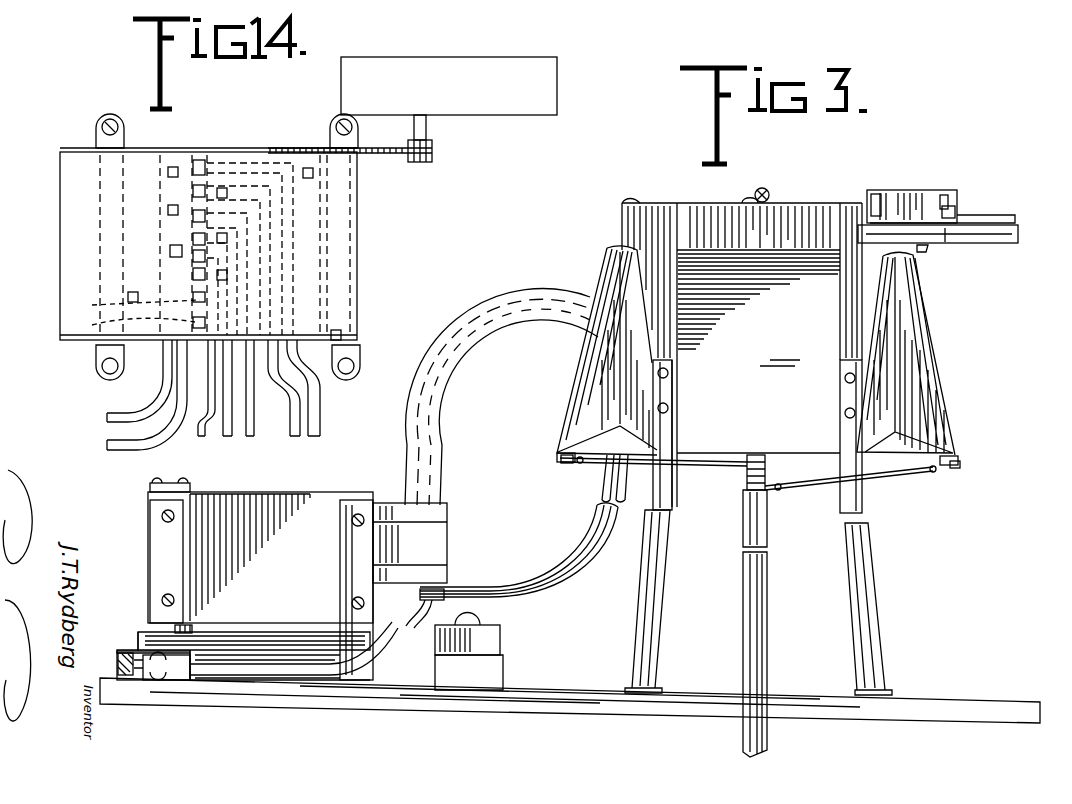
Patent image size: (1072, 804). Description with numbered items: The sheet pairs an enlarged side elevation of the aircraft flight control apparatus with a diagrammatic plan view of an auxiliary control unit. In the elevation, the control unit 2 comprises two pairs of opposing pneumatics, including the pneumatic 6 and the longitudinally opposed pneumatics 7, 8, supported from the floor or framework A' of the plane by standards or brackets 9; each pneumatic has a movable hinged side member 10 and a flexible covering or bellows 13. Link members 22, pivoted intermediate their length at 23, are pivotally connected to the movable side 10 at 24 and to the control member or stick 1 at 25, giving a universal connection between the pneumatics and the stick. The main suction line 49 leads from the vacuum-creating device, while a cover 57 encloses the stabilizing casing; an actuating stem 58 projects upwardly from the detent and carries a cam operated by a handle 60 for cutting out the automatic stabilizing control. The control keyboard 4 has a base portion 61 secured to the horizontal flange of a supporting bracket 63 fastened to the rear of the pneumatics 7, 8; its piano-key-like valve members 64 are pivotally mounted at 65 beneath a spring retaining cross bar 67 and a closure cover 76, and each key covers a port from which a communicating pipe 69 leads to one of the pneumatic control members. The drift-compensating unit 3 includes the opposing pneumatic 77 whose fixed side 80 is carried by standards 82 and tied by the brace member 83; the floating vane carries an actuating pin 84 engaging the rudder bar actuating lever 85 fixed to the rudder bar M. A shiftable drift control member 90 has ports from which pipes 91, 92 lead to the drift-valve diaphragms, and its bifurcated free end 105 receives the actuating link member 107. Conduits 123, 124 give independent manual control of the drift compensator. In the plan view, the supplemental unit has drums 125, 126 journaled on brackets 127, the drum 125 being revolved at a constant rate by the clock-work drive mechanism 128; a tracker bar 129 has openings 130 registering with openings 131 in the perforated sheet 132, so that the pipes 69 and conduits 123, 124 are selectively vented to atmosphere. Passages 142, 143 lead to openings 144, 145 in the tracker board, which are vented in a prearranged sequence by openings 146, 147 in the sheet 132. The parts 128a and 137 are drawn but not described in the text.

In FIG. 3, the control member or stick 1 is at (767, 628).
In FIG. 3, the control unit 2 is at (690, 265).
In FIG. 3, the drift-compensating unit 3 is at (284, 492).
In FIG. 3, the control keyboard 4 is at (928, 190).
In FIG. 3, the pneumatic 6 is at (742, 328).
In FIG. 3, the pneumatic 7 is at (568, 368).
In FIG. 3, the pneumatic 8 is at (938, 362).
In FIG. 3, the standards or brackets 9 is at (666, 570).
In FIG. 3, the movable side member 10 is at (565, 432).
In FIG. 3, the flexible covering or bellows 13 is at (672, 425).
In FIG. 3, the link members 22 is at (752, 455).
In FIG. 3, the intermediate pivot 23 is at (580, 463).
In FIG. 3, the pivotal connection to movable side 24 is at (560, 462).
In FIG. 3, the pivotal connection to control stick 25 is at (747, 455).
In FIG. 3, the main suction line 49 is at (478, 368).
In FIG. 3, the cover 57 is at (818, 205).
In FIG. 3, the actuating stem 58 is at (770, 187).
In FIG. 3, the handle 60 is at (749, 200).
In FIG. 3, the base portion 61 is at (964, 246).
In FIG. 3, the supporting bracket 63 is at (925, 254).
In FIG. 3, the valve members 64 is at (990, 216).
In FIG. 3, the pivot 65 is at (948, 194).
In FIG. 3, the spring retaining cross bar 67 is at (880, 190).
In FIG. 14, the communicating pipe 69 is at (222, 437).
In FIG. 3, the closure member or cover 76 is at (955, 206).
In FIG. 3, the pneumatic 77 is at (328, 500).
In FIG. 3, the fixed side 80 is at (232, 480).
In FIG. 3, the standards 82 is at (156, 575).
In FIG. 3, the brace member 83 is at (172, 486).
In FIG. 3, the actuating pin 84 is at (195, 628).
In FIG. 3, the rudder bar actuating lever 85 is at (146, 634).
In FIG. 3, the drift control member 90 is at (328, 680).
In FIG. 3, the communicating passage and pipe 91 is at (246, 660).
In FIG. 3, the communicating passage and pipe 92 is at (418, 614).
In FIG. 3, the bifurcated end 105 is at (117, 662).
In FIG. 3, the actuating link member 107 is at (130, 678).
In FIG. 14, the conduit 123 is at (252, 437).
In FIG. 14, the conduit 124 is at (292, 437).
In FIG. 14, the cylinder or drum 125 is at (350, 228).
In FIG. 14, the cylinder or drum 126 is at (60, 212).
In FIG. 14, the brackets 127 is at (124, 126).
In FIG. 14, the clock-work drive mechanism 128 is at (514, 92).
In FIG. 14, the pinion 128a is at (432, 150).
In FIG. 14, the tracker bar 129 is at (207, 160).
In FIG. 14, the openings 130 is at (193, 215).
In FIG. 14, the openings 131 is at (168, 210).
In FIG. 14, the perforated sheet 132 is at (195, 158).
In FIG. 14, the contact 137 is at (222, 270).
In FIG. 14, the passage 142 is at (107, 443).
In FIG. 14, the passage 143 is at (107, 408).
In FIG. 14, the opening 144 is at (128, 323).
In FIG. 14, the opening 145 is at (131, 305).
In FIG. 14, the opening 146 is at (341, 335).
In FIG. 14, the opening 147 is at (128, 296).
In FIG. 3, the floor or framework A' is at (570, 710).
In FIG. 3, the rudder bar M is at (500, 632).